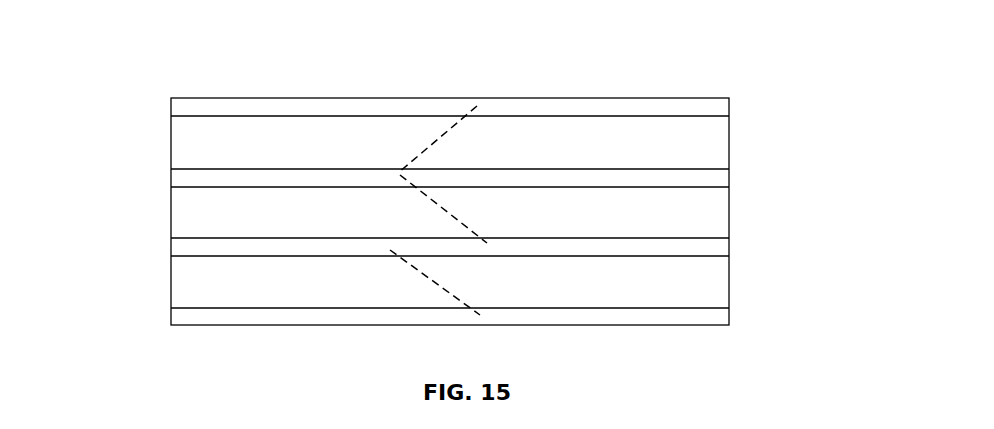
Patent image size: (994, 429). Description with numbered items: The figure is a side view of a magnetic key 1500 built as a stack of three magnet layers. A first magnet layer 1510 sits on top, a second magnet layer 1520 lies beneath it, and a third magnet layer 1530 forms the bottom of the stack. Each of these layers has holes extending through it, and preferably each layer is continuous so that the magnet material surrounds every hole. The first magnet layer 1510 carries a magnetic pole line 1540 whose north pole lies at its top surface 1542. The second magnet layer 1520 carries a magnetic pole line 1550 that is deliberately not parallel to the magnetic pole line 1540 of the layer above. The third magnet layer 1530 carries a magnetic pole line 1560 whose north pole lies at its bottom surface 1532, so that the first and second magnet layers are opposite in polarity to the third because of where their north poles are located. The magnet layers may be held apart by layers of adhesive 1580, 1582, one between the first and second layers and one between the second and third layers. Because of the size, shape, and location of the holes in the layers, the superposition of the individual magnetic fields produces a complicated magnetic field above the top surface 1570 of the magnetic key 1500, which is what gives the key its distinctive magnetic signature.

The magnetic key 1500 is at (157, 59).
The first magnet layer 1510 is at (450, 142).
The second magnet layer 1520 is at (450, 212).
The third magnet layer 1530 is at (450, 282).
The bottom surface 1532 is at (611, 311).
The magnetic pole line 1540 is at (441, 146).
The top surface 1542 is at (575, 110).
The magnetic pole line 1550 is at (450, 216).
The magnetic pole line 1560 is at (430, 277).
The top surface 1570 is at (395, 95).
The layer of adhesive 1580 is at (729, 178).
The layer of adhesive 1582 is at (729, 247).